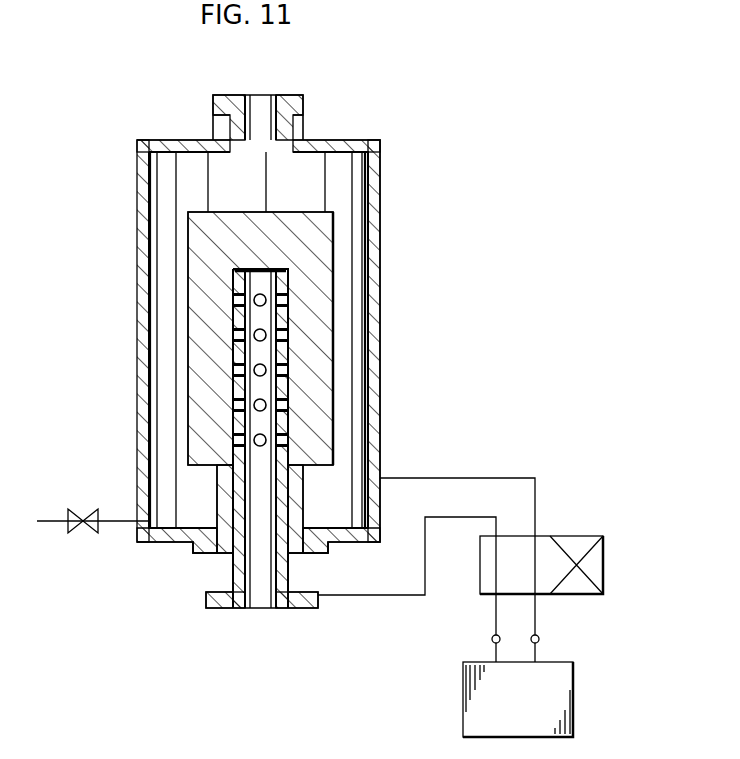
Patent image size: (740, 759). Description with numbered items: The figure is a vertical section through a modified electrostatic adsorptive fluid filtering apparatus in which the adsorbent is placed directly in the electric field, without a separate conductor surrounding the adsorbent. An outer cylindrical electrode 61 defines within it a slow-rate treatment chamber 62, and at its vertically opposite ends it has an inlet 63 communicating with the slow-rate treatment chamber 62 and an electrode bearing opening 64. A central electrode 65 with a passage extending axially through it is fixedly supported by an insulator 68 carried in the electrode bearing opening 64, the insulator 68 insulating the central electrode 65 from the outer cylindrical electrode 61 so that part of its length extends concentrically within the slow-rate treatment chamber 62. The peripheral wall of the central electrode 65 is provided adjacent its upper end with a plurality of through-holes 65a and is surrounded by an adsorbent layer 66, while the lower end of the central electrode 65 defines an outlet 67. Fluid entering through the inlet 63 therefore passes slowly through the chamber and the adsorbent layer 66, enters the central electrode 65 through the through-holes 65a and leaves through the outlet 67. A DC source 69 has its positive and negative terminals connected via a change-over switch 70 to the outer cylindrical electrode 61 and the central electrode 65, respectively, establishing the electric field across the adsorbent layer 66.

The outer cylindrical electrode 61 is at (382, 285).
The slow-rate treatment chamber 62 is at (167, 163).
The inlet 63 is at (260, 110).
The electrode bearing opening 64 is at (227, 540).
The central electrode 65 is at (252, 438).
The through-holes 65a is at (232, 368).
The adsorbent layer 66 is at (334, 227).
The outlet 67 is at (260, 600).
The insulator 68 is at (227, 490).
The DC source 69 is at (575, 697).
The change-over switch 70 is at (604, 565).